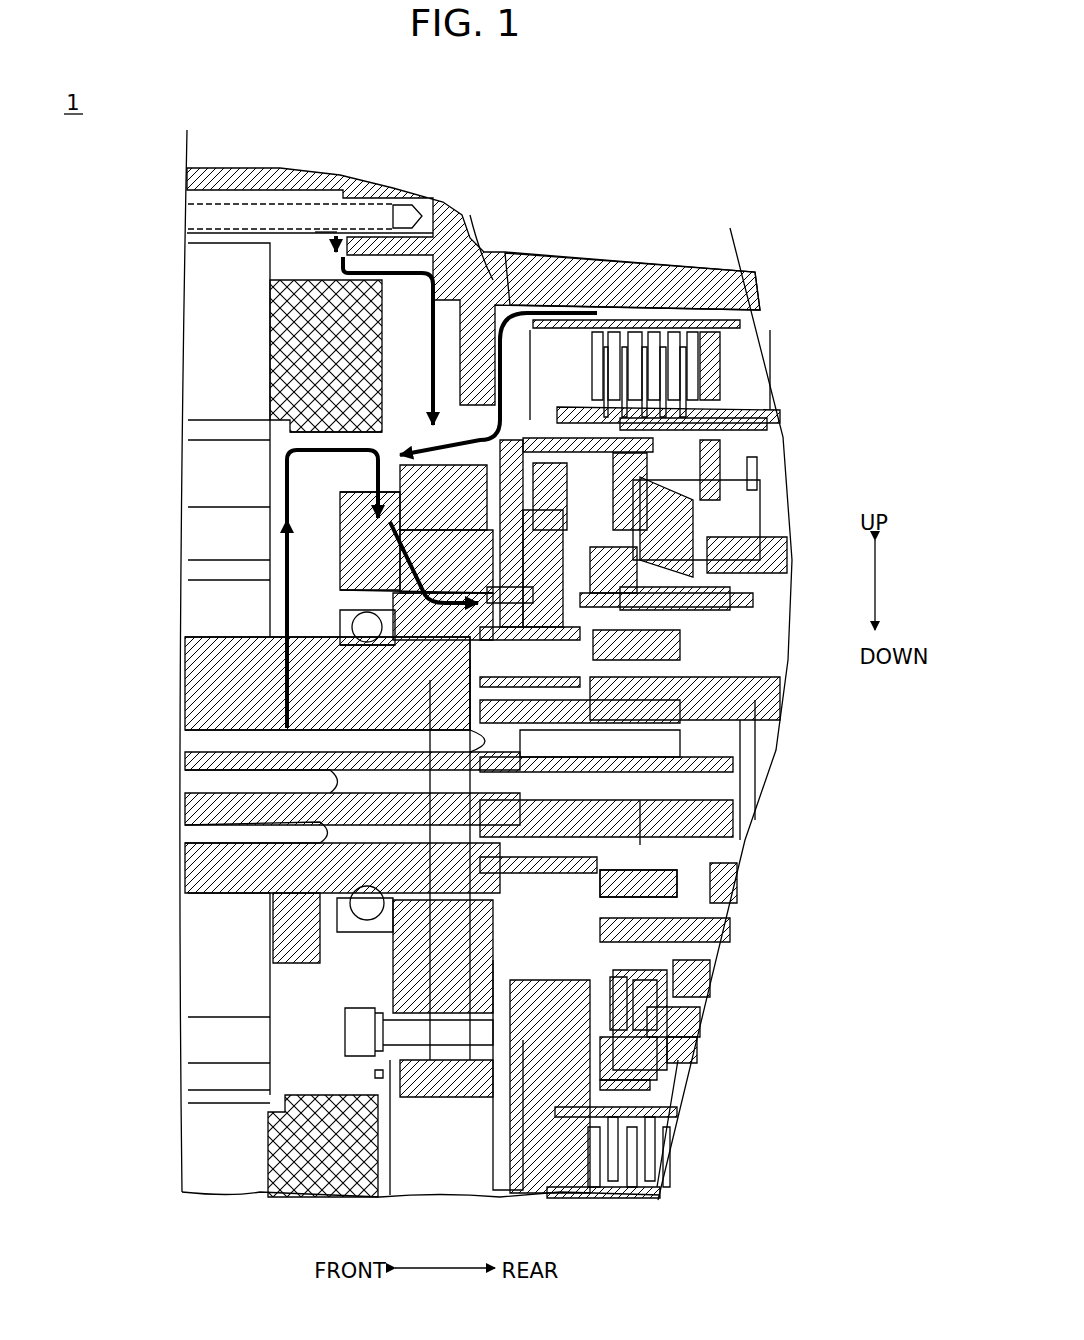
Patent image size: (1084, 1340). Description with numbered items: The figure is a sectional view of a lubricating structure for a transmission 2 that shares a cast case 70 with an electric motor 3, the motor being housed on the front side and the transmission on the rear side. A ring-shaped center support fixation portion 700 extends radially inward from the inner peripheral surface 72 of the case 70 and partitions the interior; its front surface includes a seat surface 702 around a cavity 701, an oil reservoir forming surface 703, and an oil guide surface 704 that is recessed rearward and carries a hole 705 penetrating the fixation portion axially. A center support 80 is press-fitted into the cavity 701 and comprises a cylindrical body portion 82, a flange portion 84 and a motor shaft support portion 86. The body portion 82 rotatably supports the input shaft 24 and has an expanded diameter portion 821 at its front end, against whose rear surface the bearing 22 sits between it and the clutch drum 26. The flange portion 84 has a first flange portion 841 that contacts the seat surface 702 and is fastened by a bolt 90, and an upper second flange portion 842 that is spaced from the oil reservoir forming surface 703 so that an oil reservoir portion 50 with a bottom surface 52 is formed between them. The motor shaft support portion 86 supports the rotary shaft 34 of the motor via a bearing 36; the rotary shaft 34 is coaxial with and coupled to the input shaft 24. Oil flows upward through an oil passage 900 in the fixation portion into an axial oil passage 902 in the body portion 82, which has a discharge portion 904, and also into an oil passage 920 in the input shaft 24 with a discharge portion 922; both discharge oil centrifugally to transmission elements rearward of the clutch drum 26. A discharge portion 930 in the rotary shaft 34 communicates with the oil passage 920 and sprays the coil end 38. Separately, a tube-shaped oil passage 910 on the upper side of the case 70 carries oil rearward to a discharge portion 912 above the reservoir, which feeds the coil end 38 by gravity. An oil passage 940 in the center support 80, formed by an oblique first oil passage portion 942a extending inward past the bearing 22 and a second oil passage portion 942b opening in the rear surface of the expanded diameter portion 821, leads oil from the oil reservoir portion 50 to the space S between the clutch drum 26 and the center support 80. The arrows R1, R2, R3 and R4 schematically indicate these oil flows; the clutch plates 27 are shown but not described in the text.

The transmission 2 is at (738, 370).
The electric motor 3 is at (282, 1050).
The bearing 22 is at (503, 558).
The input shaft 24 is at (718, 808).
The clutch drum 26 is at (713, 600).
The clutch plates 27 is at (640, 330).
The rotary shaft 34 is at (195, 855).
The bearing 36 is at (330, 903).
The coil end 38 is at (302, 280).
The oil reservoir portion 50 is at (380, 480).
The bottom surface 52 is at (380, 510).
The case 70 is at (557, 250).
The inner peripheral surface 72 is at (666, 300).
The center support 80 is at (365, 965).
The body portion 82 is at (680, 880).
The flange portion 84 is at (373, 1097).
The motor shaft support portion 86 is at (332, 935).
The bolt 90 is at (343, 1035).
The center support fixation portion 700 is at (395, 428).
The cavity 701 is at (360, 470).
The seat surface 702 is at (392, 1075).
The oil reservoir forming surface 703 is at (440, 395).
The oil guide surface 704 is at (493, 275).
The hole 705 is at (440, 340).
The expanded diameter portion 821 is at (620, 1010).
The first flange portion 841 is at (377, 1073).
The second flange portion 842 is at (355, 497).
The oil passage 900 is at (417, 975).
The oil passage 902 is at (680, 735).
The discharge portion 904 is at (680, 778).
The oil passage 910 is at (229, 193).
The discharge portion 912 is at (337, 228).
The oil passage 920 is at (230, 752).
The discharge portion 922 is at (710, 682).
The discharge portion 930 is at (330, 655).
The oil passage 940 is at (395, 595).
The first oil passage portion 942a is at (400, 570).
The second oil passage portion 942b is at (400, 615).
The arrow R1 is at (365, 270).
The arrow R2 is at (330, 420).
The arrow R3 is at (538, 312).
The arrow R4 is at (393, 575).
The space S is at (640, 828).